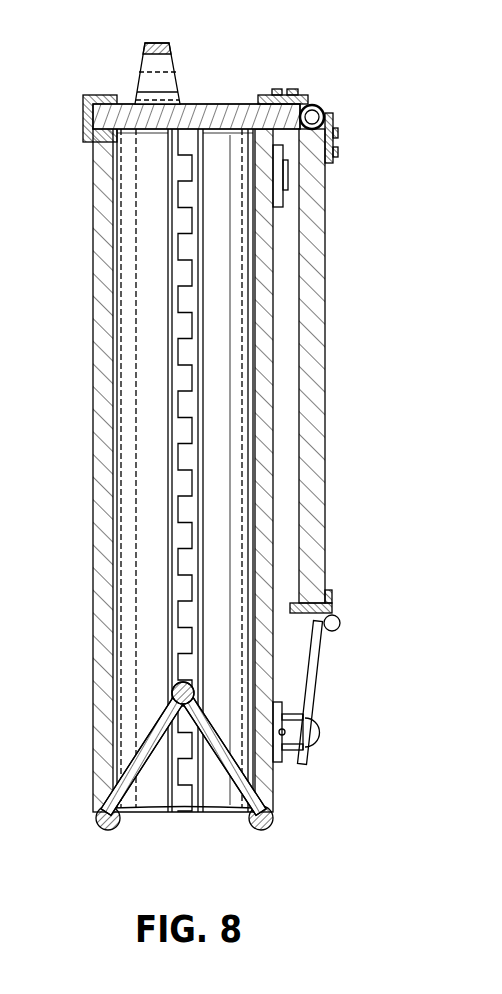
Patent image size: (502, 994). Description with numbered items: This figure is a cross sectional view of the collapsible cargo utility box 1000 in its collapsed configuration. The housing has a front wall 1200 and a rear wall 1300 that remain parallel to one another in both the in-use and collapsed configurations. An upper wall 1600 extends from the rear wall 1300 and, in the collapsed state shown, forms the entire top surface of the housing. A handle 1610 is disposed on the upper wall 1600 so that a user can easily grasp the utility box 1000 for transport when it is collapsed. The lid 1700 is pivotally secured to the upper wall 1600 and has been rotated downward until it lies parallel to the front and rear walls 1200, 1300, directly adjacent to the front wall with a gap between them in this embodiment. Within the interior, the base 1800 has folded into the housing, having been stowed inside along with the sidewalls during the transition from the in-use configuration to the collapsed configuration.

The collapsible cargo utility box 1000 is at (375, 76).
The front wall 1200 is at (273, 777).
The rear wall 1300 is at (93, 322).
The upper wall 1600 is at (214, 104).
The handle 1610 is at (145, 54).
The lid 1700 is at (325, 263).
The base 1800 is at (228, 800).